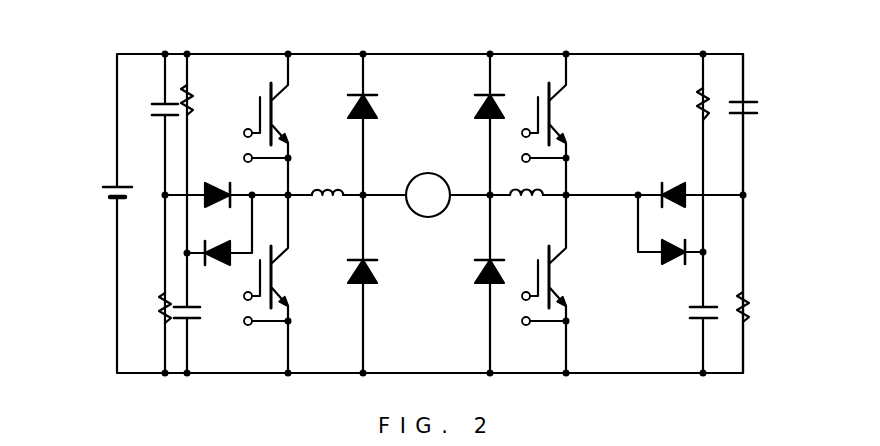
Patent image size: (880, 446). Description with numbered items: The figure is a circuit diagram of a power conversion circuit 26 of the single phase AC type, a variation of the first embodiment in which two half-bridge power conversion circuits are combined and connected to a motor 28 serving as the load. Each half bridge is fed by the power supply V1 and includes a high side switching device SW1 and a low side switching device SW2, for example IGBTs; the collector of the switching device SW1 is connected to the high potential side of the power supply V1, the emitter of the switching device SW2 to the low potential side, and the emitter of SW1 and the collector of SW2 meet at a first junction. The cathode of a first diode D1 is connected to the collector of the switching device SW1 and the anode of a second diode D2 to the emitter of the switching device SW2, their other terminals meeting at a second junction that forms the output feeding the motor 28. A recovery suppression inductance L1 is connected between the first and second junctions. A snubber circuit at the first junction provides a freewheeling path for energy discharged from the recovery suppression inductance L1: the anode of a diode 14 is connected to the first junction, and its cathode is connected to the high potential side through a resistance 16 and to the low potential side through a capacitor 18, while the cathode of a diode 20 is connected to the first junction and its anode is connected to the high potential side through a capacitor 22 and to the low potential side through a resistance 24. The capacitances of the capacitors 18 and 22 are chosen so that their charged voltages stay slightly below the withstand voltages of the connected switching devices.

The power conversion circuit 26 is at (92, 72).
The power supply V1 is at (101, 198).
The capacitor 22 is at (158, 122).
The resistance 16 is at (196, 104).
The diode 20 is at (213, 177).
The diode 14 is at (217, 268).
The resistance 24 is at (160, 316).
The capacitor 18 is at (203, 316).
The high side switching device SW1 is at (284, 118).
The low side switching device SW2 is at (284, 278).
The first diode D1 is at (378, 103).
The second diode D2 is at (378, 270).
The recovery suppression inductance L1 is at (331, 201).
The motor 28 is at (428, 171).